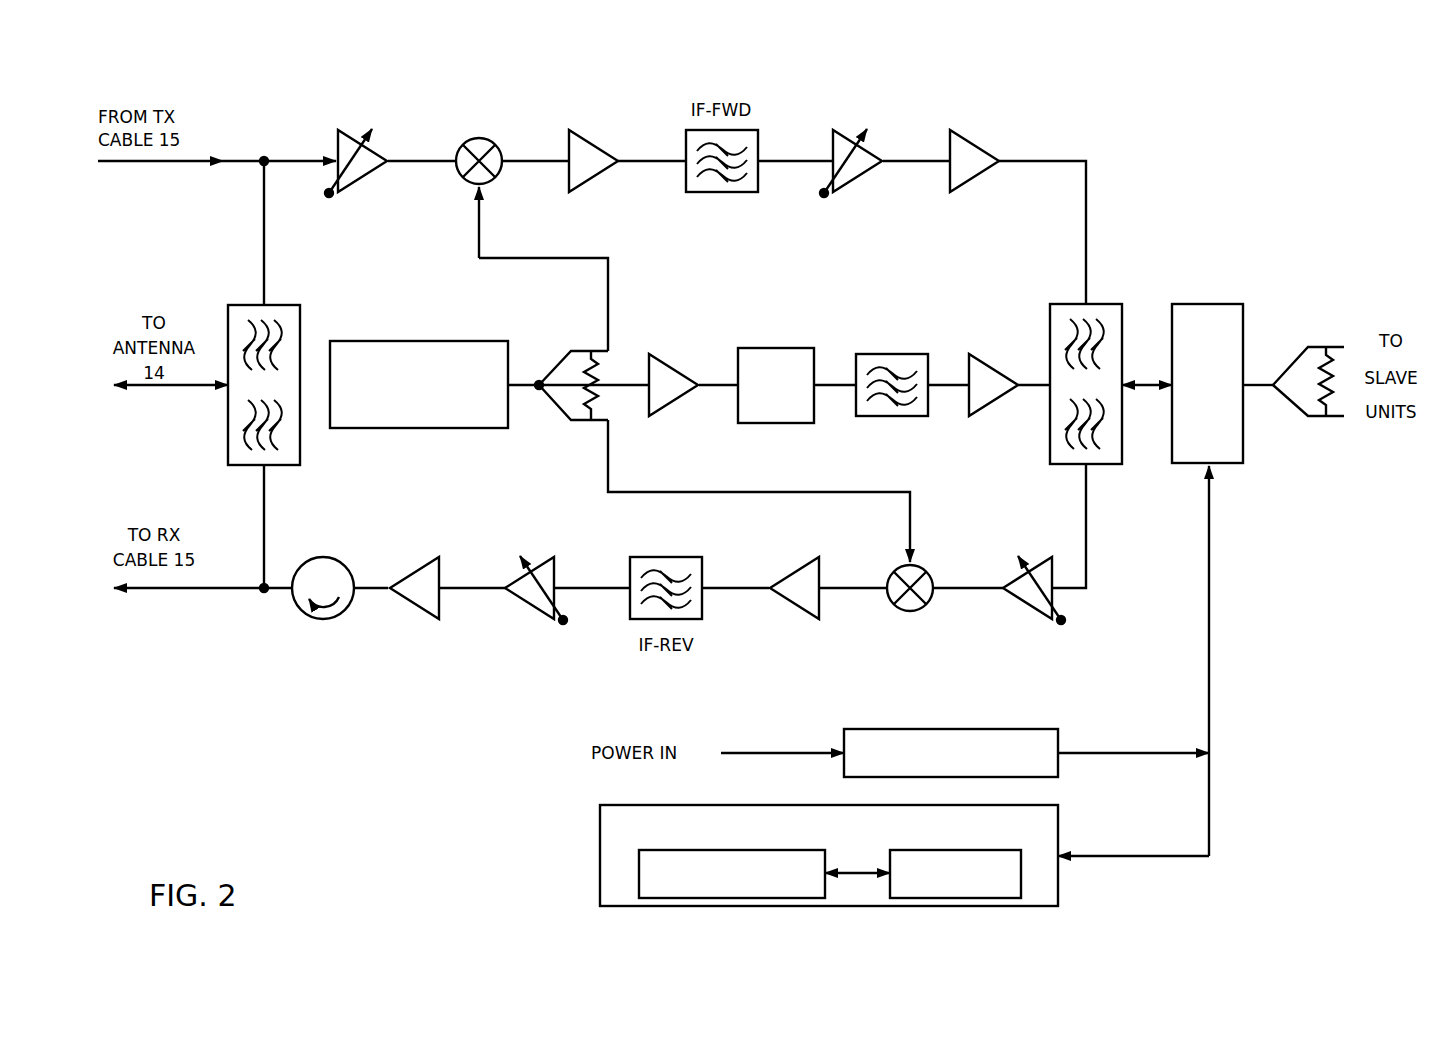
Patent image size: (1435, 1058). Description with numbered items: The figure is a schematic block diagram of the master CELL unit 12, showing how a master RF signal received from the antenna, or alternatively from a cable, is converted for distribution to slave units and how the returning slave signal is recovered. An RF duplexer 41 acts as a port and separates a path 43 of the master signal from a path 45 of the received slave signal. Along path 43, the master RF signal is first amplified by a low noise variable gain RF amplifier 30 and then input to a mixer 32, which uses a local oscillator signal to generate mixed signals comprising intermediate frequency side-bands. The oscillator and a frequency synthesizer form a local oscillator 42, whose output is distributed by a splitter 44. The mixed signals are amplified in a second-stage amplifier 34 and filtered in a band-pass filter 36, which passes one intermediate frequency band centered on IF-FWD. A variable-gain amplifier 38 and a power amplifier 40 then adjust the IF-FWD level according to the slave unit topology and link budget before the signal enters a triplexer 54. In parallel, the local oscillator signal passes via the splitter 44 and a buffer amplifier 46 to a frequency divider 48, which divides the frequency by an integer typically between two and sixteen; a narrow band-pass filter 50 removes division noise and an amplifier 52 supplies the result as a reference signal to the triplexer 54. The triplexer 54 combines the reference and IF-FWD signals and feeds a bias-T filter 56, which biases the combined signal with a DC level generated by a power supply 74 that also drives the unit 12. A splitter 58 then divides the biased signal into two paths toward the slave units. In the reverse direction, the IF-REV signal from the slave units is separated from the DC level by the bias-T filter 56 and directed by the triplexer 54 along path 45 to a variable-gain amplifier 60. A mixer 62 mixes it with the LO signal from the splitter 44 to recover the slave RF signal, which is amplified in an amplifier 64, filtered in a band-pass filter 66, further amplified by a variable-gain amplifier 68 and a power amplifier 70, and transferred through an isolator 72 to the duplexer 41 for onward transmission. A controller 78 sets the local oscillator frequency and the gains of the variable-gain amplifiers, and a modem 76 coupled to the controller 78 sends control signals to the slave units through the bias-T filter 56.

The master CELL unit 12 is at (1140, 128).
The low noise variable gain RF amplifier 30 is at (347, 131).
The mixer 32 is at (484, 138).
The second-stage amplifier 34 is at (590, 136).
The band-pass filter 36 is at (712, 191).
The variable-gain amplifier 38 is at (853, 180).
The power amplifier 40 is at (972, 134).
The RF duplexer 41 is at (283, 305).
The local oscillator 42 is at (420, 340).
The path 43 is at (440, 198).
The splitter 44 is at (578, 345).
The path 45 is at (420, 547).
The buffer amplifier 46 is at (665, 360).
The frequency divider 48 is at (772, 347).
The narrow band-pass filter 50 is at (887, 351).
The amplifier 52 is at (982, 356).
The triplexer 54 is at (1101, 303).
The bias-T filter 56 is at (1200, 303).
The splitter 58 is at (1318, 416).
The variable-gain amplifier 60 is at (1033, 612).
The mixer 62 is at (907, 612).
The amplifier 64 is at (800, 612).
The band-pass filter 66 is at (661, 557).
The variable-gain amplifier 68 is at (541, 612).
The power amplifier 70 is at (427, 618).
The isolator 72 is at (322, 618).
The power supply 74 is at (953, 728).
The modem 76 is at (972, 849).
The controller 78 is at (772, 849).